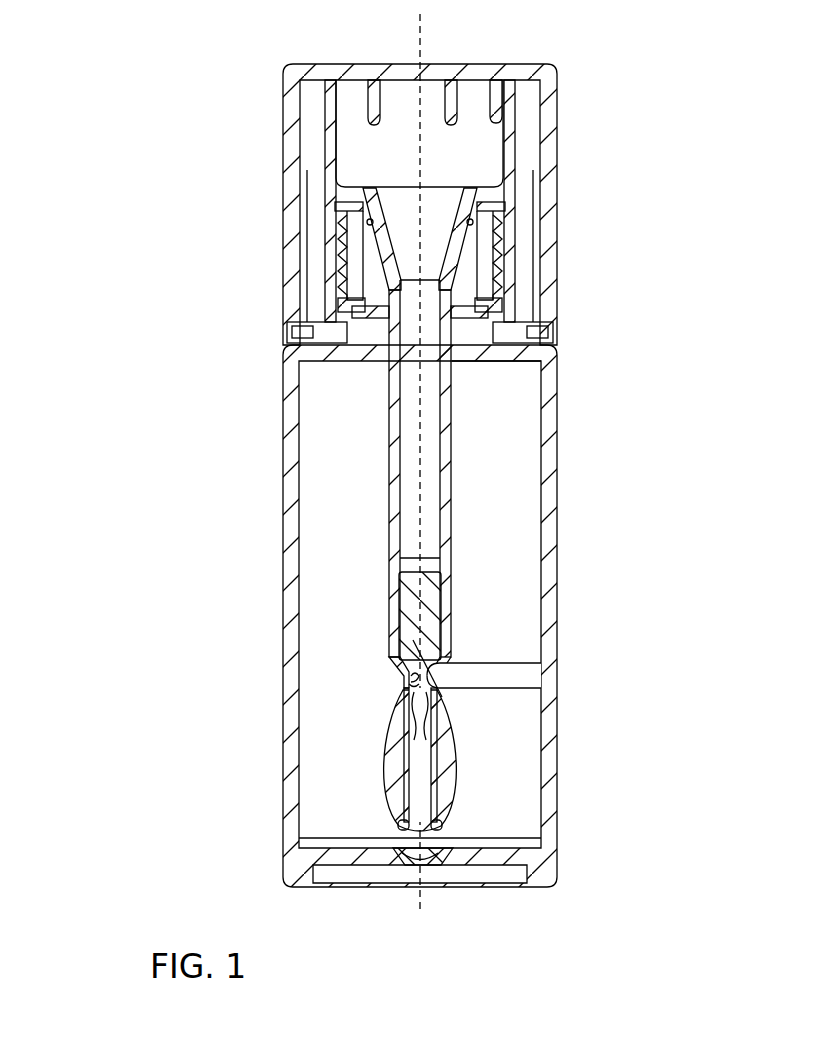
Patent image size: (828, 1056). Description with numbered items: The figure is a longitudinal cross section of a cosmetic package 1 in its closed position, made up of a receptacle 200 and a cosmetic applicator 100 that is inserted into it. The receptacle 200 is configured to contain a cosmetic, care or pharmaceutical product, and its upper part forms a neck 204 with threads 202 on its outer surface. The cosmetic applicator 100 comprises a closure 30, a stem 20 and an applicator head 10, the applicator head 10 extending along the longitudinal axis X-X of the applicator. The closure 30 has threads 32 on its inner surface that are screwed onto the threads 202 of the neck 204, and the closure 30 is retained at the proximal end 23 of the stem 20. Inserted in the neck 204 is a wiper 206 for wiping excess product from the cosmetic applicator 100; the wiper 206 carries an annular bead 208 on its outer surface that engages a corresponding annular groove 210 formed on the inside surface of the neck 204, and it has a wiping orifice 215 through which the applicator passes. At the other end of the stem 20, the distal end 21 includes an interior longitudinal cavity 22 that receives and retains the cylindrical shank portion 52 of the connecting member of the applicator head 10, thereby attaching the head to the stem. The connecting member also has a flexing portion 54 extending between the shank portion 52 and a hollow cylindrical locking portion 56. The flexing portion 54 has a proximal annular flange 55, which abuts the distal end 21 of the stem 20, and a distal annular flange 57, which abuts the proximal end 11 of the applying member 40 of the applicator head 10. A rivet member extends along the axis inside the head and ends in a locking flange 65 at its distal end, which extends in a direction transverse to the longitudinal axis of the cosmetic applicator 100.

The cosmetic package 1 is at (142, 195).
The applicator head 10 is at (368, 733).
The proximal end of the applying member 11 is at (438, 693).
The stem 20 is at (389, 512).
The distal end of the stem 21 is at (447, 318).
The interior longitudinal cavity 22 is at (397, 576).
The proximal end of the stem 23 is at (462, 222).
The closure 30 is at (283, 129).
The threads 32 is at (516, 273).
The applying member 40 is at (443, 758).
The shank portion 52 is at (443, 603).
The flexing portion 54 is at (410, 673).
The proximal annular flange 55 is at (441, 662).
The locking portion 56 is at (441, 688).
The distal annular flange 57 is at (413, 686).
The locking flange 65 is at (445, 822).
The cosmetic applicator 100 is at (462, 542).
The receptacle 200 is at (550, 650).
The threads 202 is at (500, 247).
The neck 204 is at (490, 304).
The wiper 206 is at (350, 300).
The annular bead 208 is at (355, 243).
The annular groove 210 is at (358, 243).
The wiping orifice 215 is at (390, 333).